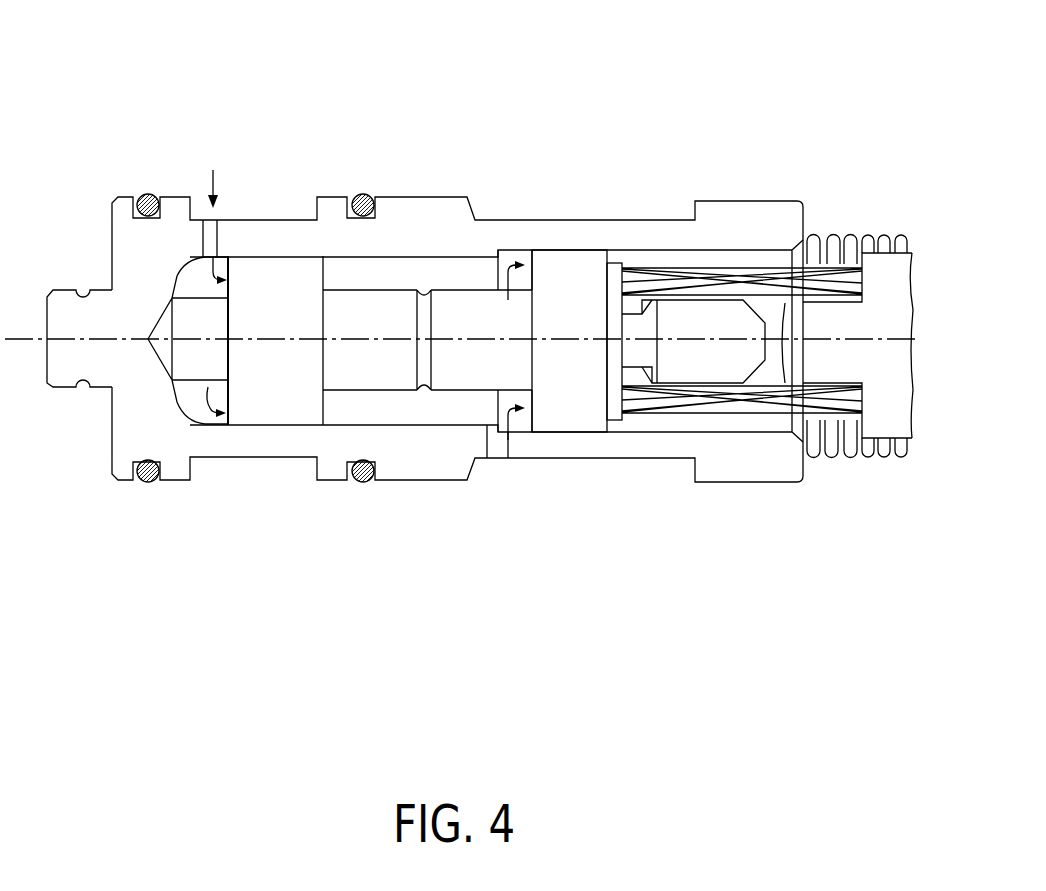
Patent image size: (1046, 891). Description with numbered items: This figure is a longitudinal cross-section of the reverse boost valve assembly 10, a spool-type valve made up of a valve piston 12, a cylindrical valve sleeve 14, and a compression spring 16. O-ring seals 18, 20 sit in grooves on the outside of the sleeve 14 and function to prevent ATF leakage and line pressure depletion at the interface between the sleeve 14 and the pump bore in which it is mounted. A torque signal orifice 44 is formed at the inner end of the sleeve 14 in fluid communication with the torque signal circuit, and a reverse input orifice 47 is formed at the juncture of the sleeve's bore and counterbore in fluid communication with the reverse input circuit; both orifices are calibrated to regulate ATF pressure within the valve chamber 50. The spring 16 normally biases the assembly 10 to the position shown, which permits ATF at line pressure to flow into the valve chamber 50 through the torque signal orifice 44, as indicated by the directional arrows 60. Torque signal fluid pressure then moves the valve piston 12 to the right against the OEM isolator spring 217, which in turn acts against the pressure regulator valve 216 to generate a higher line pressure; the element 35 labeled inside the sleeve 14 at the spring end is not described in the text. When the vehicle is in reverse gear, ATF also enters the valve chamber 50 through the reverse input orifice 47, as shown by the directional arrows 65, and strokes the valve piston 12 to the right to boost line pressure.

The reverse boost valve assembly 10 is at (499, 106).
The valve piston 12 is at (578, 265).
The cylindrical valve sleeve 14 is at (269, 213).
The compression spring 16 is at (733, 415).
The O-ring seal 18 is at (150, 195).
The O-ring seal 20 is at (364, 196).
The spring 35 is at (722, 250).
The torque signal orifice 44 is at (220, 215).
The reverse input orifice 47 is at (497, 450).
The valve chamber 50 is at (187, 280).
The directional arrows 60 is at (212, 170).
The directional arrows 65 is at (498, 275).
The pressure regulator valve 216 is at (887, 361).
The isolator spring 217 is at (850, 458).